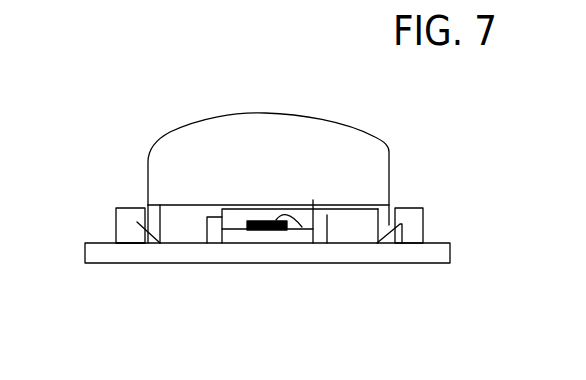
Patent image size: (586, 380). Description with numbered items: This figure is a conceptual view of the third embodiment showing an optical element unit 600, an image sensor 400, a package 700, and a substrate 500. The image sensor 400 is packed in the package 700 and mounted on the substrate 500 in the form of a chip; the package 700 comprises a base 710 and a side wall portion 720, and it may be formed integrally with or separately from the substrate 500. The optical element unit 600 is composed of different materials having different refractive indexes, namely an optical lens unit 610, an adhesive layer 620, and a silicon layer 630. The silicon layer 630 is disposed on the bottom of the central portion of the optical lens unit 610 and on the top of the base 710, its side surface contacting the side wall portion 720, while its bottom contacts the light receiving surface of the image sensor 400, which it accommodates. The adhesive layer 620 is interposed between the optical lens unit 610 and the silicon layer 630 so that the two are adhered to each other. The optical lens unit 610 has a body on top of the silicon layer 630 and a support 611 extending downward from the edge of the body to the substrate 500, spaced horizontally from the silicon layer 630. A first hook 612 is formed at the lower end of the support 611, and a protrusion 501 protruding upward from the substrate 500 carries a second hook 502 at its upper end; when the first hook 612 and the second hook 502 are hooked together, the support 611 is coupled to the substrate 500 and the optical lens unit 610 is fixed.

The image sensor 400 is at (260, 209).
The substrate 500 is at (393, 248).
The protrusion 501 is at (122, 237).
The second hook 502 is at (137, 217).
The optical element unit 600 is at (350, 177).
The optical lens unit 610 is at (370, 156).
The support 611 is at (154, 228).
The first hook 612 is at (147, 232).
The adhesive layer 620 is at (313, 200).
The silicon layer 630 is at (313, 215).
The package 700 is at (254, 283).
The base 710 is at (260, 232).
The side wall portion 720 is at (226, 263).